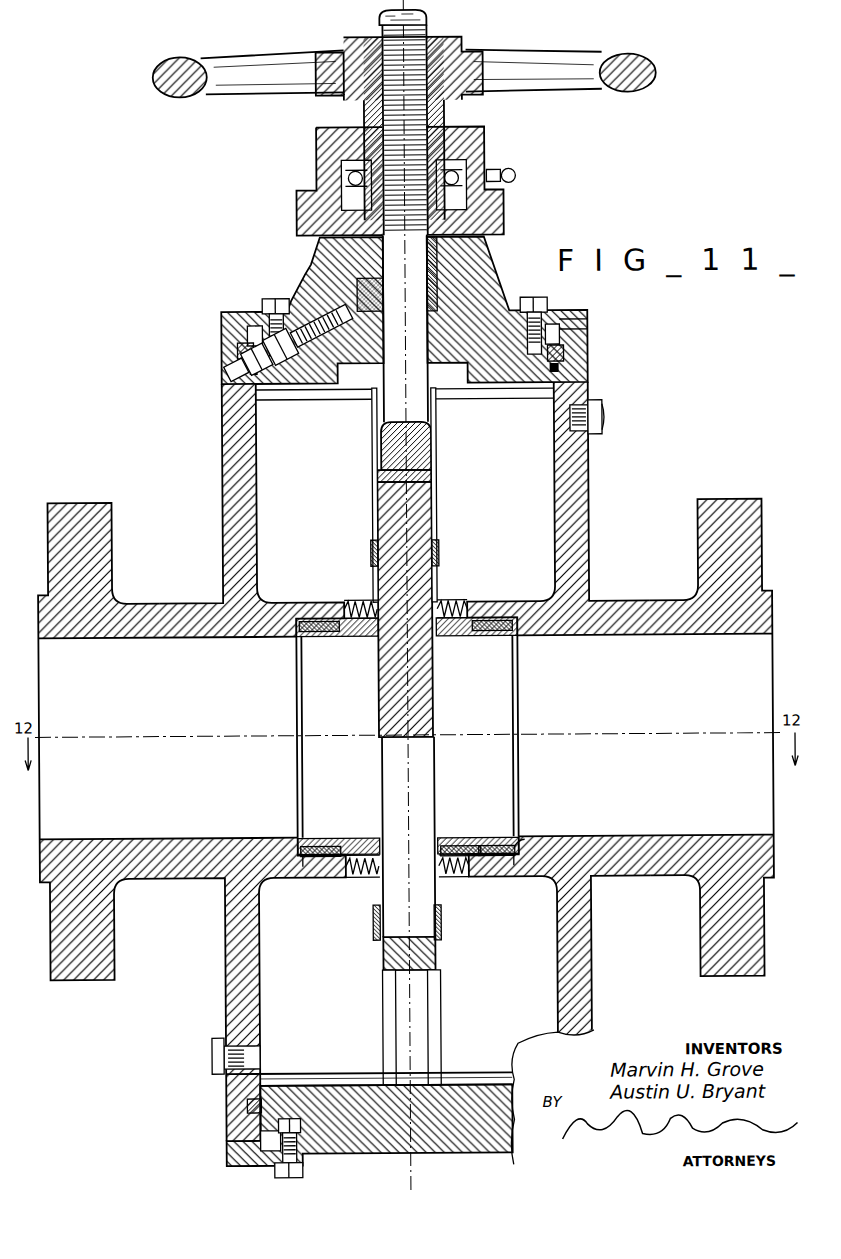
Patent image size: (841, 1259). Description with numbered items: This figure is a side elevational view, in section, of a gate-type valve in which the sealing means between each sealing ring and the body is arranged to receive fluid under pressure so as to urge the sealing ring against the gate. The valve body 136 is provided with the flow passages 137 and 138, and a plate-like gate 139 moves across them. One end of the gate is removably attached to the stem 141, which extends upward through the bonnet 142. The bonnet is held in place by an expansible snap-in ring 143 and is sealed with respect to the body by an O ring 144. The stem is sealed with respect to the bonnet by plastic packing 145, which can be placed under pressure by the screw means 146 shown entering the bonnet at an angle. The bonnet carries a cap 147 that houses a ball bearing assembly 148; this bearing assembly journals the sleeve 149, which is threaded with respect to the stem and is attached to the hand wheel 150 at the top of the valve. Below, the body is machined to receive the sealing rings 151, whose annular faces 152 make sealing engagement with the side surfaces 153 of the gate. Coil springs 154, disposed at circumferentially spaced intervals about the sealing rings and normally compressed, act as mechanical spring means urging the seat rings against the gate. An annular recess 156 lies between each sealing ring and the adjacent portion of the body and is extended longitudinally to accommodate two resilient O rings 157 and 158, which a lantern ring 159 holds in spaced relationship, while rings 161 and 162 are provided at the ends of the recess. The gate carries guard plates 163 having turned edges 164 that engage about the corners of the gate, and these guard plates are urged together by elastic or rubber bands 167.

The valve body 136 is at (582, 483).
The flow passage 137 is at (152, 660).
The flow passage 138 is at (632, 650).
The plate-like gate 139 is at (434, 505).
The stem 141 is at (387, 413).
The bonnet 142 is at (488, 283).
The expansible snap-in ring 143 is at (587, 347).
The O ring 144 is at (563, 369).
The plastic packing 145 is at (440, 282).
The screw means 146 is at (265, 284).
The cap 147 is at (489, 140).
The ball bearing assembly 148 is at (349, 176).
The sleeve 149 is at (372, 105).
The hand wheel 150 is at (542, 46).
The sealing ring 151 is at (450, 636).
The annular face 152 is at (367, 636).
The side surface 153 is at (382, 682).
The coil spring 154 is at (447, 600).
The annular recess 156 is at (500, 855).
The O ring 157 is at (340, 855).
The O ring 158 is at (322, 846).
The lantern ring 159 is at (500, 846).
The ring 161 is at (477, 636).
The ring 162 is at (520, 845).
The guard plate 163 is at (383, 434).
The turned edge 164 is at (379, 454).
The rubber band 167 is at (372, 550).